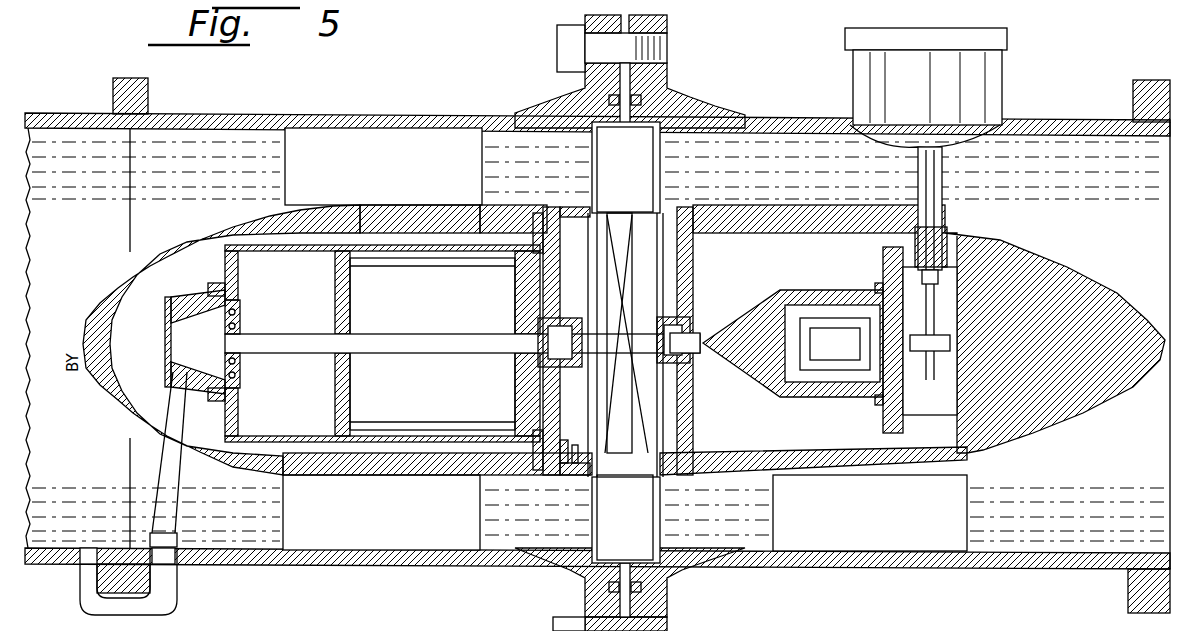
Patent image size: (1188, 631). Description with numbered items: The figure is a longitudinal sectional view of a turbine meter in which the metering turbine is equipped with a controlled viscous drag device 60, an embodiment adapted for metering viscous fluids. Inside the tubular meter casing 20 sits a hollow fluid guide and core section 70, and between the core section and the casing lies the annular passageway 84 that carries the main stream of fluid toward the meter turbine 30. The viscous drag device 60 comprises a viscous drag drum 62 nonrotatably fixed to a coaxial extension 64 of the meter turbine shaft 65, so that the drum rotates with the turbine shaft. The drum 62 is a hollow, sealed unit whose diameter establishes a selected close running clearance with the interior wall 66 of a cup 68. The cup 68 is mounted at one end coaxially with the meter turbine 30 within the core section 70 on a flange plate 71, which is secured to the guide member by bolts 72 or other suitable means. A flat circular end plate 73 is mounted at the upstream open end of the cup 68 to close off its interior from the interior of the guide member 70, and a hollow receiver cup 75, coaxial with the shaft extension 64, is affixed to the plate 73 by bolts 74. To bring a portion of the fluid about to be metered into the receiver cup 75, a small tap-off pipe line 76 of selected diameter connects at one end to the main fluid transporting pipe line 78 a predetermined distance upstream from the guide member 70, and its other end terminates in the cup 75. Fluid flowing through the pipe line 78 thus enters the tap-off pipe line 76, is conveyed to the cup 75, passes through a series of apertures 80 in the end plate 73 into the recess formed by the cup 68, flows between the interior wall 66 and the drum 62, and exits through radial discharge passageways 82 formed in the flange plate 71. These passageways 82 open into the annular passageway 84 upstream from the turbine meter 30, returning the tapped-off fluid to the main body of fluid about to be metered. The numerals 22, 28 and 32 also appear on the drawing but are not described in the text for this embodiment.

The tubular meter casing 20 is at (400, 78).
The housing 22 is at (505, 198).
The downstream tail cone 28 is at (1007, 248).
The meter turbine 30 is at (643, 520).
The pickup unit 32 is at (1000, 90).
The viscous drag device 60 is at (336, 214).
The viscous drag drum 62 is at (387, 423).
The coaxial extension 64 is at (453, 343).
The meter turbine shaft 65 is at (620, 345).
The interior wall 66 is at (313, 442).
The cup 68 is at (250, 447).
The hollow fluid guide and core section 70 is at (243, 213).
The flange plate 71 is at (573, 227).
The bolts 72 is at (563, 460).
The flat circular end plate 73 is at (223, 268).
The bolts 74 is at (215, 401).
The hollow receiver cup 75 is at (182, 297).
The tap-off pipe line 76 is at (167, 583).
The main fluid transporting pipe line 78 is at (60, 547).
The apertures 80 is at (238, 308).
The radial discharge passageways 82 is at (552, 217).
The annular passageway 84 is at (425, 143).